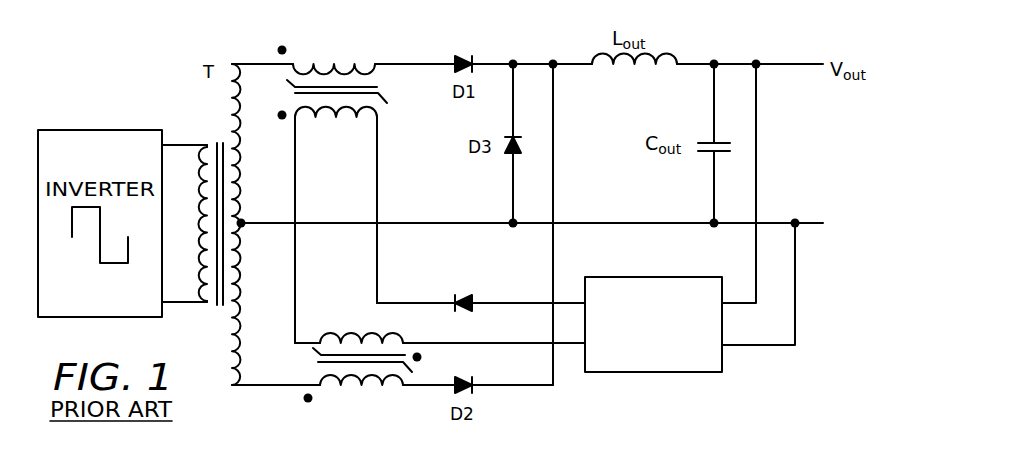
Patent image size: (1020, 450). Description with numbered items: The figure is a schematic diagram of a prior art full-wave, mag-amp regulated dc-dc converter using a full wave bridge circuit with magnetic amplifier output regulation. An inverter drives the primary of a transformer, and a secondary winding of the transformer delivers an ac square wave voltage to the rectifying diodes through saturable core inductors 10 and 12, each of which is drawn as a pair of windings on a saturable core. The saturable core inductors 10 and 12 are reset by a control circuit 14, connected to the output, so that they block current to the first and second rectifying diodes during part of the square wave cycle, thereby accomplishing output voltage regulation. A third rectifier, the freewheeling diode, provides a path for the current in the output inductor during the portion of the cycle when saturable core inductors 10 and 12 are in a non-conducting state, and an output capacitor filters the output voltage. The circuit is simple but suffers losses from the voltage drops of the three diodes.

The saturable core inductor 10 is at (338, 63).
The saturable core inductor 12 is at (363, 392).
The control circuit 14 is at (670, 372).